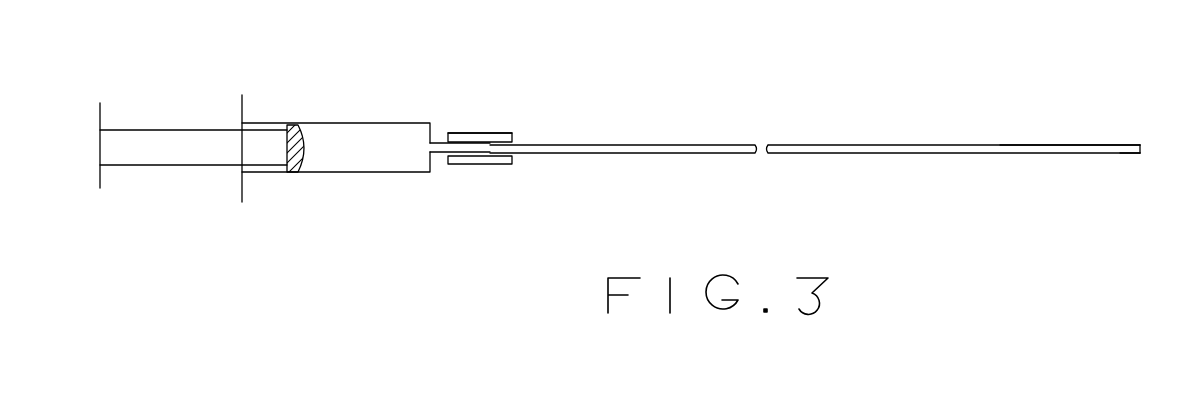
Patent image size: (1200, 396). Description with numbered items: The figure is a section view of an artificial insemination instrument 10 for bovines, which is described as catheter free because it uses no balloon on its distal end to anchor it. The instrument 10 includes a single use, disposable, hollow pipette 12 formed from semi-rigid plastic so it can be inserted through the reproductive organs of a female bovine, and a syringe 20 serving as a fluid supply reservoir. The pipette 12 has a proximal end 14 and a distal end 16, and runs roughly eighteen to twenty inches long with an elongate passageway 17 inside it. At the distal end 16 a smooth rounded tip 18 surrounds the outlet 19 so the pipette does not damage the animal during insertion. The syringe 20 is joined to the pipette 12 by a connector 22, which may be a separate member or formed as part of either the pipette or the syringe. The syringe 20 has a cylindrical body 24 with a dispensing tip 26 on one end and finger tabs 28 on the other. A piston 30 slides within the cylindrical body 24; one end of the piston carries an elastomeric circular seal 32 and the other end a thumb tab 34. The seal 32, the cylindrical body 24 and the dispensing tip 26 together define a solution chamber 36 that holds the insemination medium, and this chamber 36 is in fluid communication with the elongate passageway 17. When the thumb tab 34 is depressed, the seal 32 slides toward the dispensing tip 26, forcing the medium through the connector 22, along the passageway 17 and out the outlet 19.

The AI instrument 10 is at (629, 52).
The pipette 12 is at (668, 155).
The proximal end 14 is at (500, 164).
The distal end 16 is at (1057, 145).
The elongate passageway 17 is at (835, 146).
The smooth rounded tip 18 is at (1138, 157).
The outlet 19 is at (1140, 152).
The syringe 20 is at (314, 230).
The connector 22 is at (470, 131).
The cylindrical body 24 is at (343, 174).
The dispensing tip 26 is at (437, 155).
The finger tabs 28 is at (243, 108).
The piston 30 is at (158, 130).
The elastomeric circular seal 32 is at (307, 143).
The thumb tab 34 is at (100, 138).
The solution chamber 36 is at (368, 161).